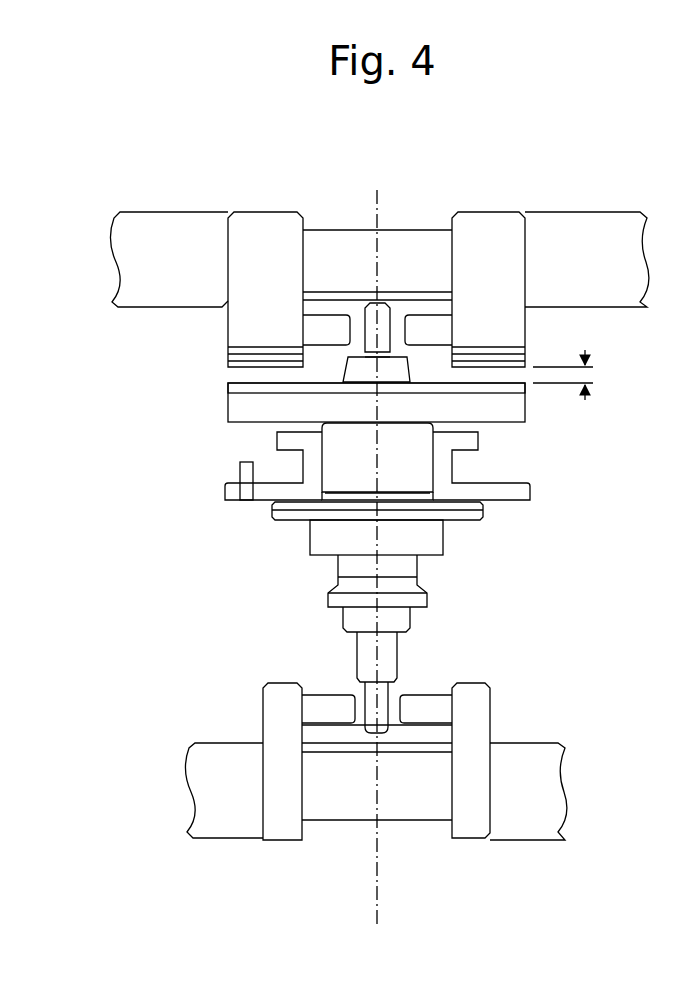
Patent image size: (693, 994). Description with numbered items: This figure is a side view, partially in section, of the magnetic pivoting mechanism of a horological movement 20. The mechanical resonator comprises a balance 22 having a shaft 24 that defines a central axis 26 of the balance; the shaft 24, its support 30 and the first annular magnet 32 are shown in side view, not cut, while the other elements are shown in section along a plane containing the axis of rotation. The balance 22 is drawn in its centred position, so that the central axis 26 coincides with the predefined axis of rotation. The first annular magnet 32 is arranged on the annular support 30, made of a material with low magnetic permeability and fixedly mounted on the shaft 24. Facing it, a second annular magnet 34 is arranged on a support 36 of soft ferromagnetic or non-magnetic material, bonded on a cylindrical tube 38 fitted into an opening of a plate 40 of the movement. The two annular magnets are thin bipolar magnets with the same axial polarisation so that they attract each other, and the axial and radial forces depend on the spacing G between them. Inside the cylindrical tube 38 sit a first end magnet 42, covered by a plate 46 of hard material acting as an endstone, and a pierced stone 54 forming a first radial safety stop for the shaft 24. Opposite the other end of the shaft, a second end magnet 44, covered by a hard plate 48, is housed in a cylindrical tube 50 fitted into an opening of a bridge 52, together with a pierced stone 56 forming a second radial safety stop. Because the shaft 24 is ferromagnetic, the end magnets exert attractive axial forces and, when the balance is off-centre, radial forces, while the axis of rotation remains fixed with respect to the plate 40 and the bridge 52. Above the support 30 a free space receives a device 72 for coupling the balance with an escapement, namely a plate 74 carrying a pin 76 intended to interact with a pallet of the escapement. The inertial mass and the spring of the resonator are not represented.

The horological movement 20 is at (138, 730).
The balance 22 is at (427, 626).
The shaft 24 is at (350, 564).
The central axis 26 is at (493, 558).
The support 30 is at (510, 408).
The first annular magnet 32 is at (240, 388).
The second annular magnet 34 is at (240, 368).
The support 36 is at (238, 352).
The cylindrical tube 38 is at (258, 223).
The plate 40 is at (157, 230).
The first end magnet 42 is at (333, 250).
The second end magnet 44 is at (337, 807).
The plate 46 is at (410, 295).
The plate 48 is at (417, 747).
The cylindrical tube 50 is at (472, 828).
The bridge 52 is at (222, 813).
The pierced stone 54 is at (437, 331).
The pierced stone 56 is at (327, 705).
The device for coupling the balance with an escapement 72 is at (403, 491).
The plate 74 is at (503, 497).
The pin 76 is at (245, 473).